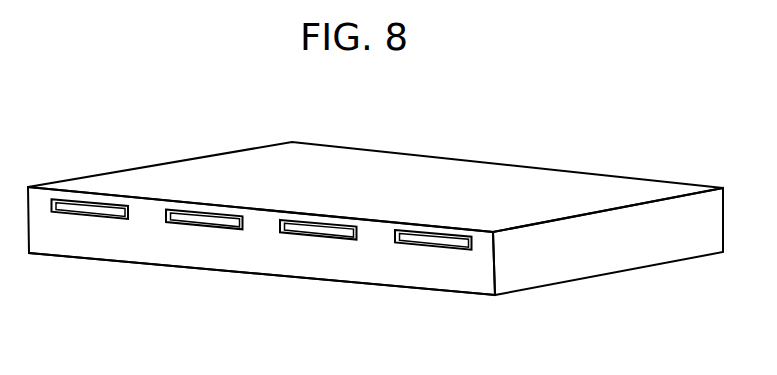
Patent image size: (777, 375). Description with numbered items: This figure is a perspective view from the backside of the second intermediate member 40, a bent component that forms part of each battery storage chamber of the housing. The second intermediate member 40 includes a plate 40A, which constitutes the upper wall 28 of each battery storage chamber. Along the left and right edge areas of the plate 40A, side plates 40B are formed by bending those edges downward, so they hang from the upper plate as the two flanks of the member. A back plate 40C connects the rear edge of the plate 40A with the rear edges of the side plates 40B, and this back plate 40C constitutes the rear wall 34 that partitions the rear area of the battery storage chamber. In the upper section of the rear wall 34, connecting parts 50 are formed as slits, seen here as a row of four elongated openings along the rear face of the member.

The upper wall 28 is at (393, 172).
The rear wall 34 is at (283, 258).
The second intermediate member 40 is at (375, 210).
The plate 40A is at (375, 152).
The side plates 40B is at (583, 260).
The back plate 40C is at (261, 274).
The connecting parts 50 is at (175, 220).